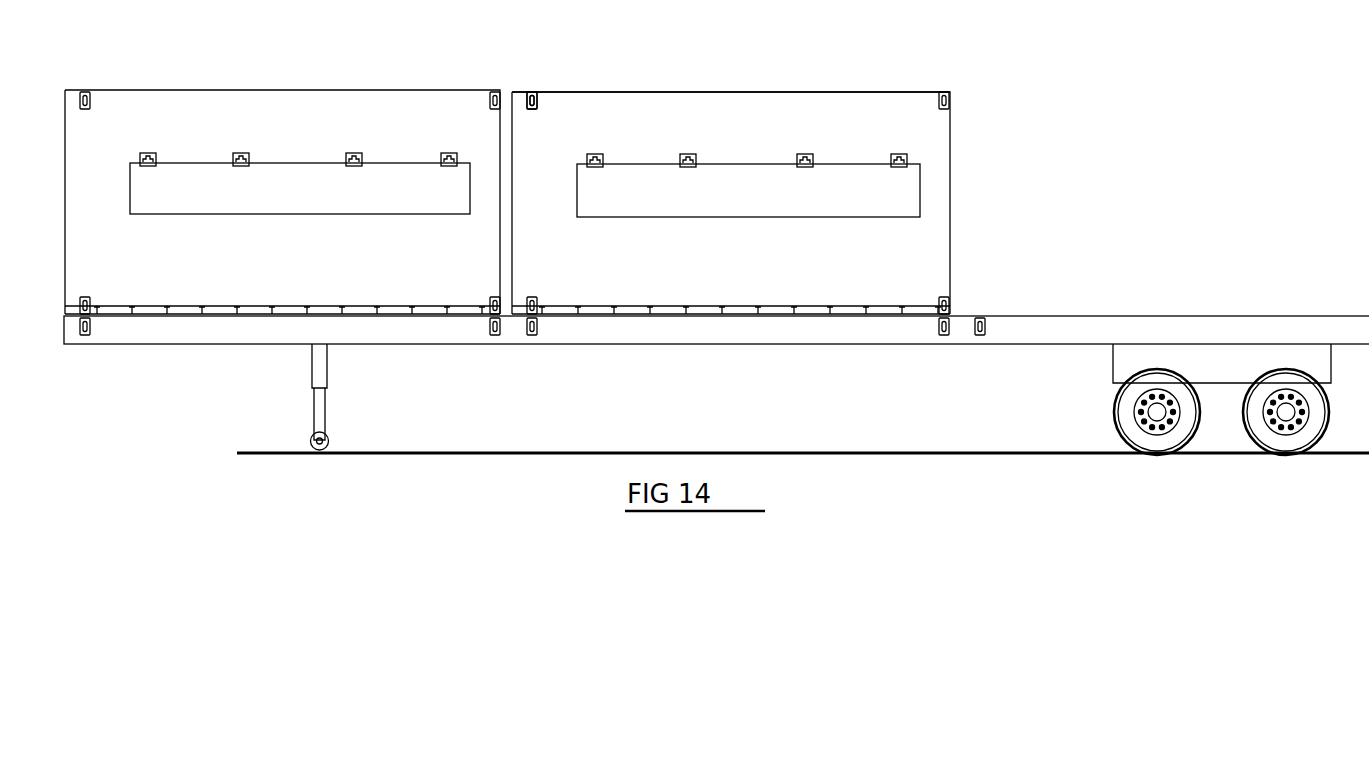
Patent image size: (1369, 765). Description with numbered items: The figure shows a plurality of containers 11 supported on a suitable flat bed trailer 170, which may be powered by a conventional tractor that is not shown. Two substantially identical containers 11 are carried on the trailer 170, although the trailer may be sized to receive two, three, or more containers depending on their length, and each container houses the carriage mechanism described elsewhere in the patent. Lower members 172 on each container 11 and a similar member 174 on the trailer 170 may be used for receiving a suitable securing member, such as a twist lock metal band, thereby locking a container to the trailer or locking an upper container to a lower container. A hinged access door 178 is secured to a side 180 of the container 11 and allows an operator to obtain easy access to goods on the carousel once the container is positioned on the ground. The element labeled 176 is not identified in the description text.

The container 11 is at (382, 97).
The flat bed trailer 170 is at (736, 334).
The lower member 172 is at (486, 306).
The member 174 is at (492, 330).
The corner casting 176 is at (535, 90).
The hinged access door 178 is at (770, 197).
The side 180 is at (774, 108).